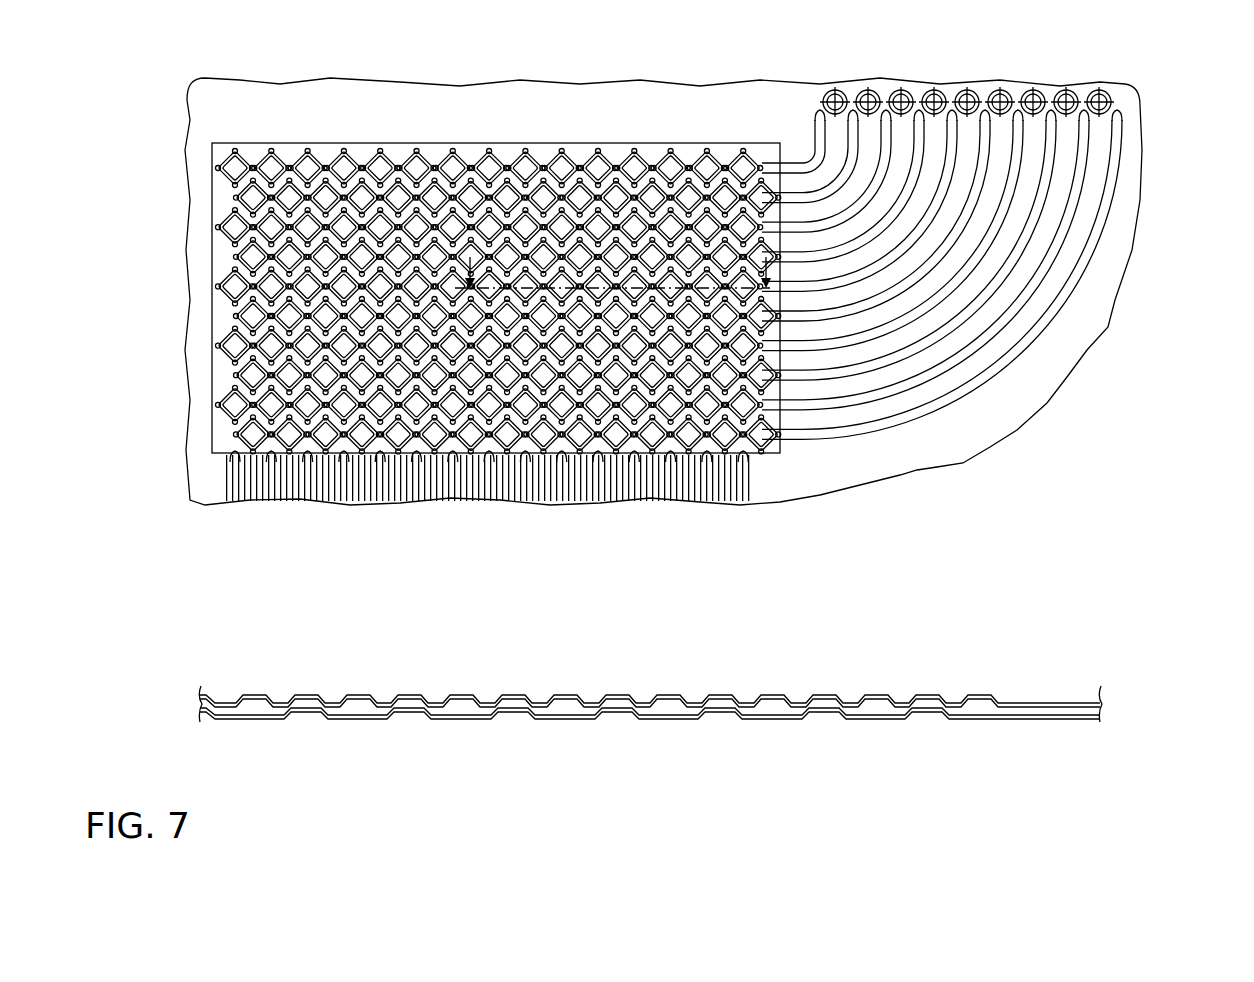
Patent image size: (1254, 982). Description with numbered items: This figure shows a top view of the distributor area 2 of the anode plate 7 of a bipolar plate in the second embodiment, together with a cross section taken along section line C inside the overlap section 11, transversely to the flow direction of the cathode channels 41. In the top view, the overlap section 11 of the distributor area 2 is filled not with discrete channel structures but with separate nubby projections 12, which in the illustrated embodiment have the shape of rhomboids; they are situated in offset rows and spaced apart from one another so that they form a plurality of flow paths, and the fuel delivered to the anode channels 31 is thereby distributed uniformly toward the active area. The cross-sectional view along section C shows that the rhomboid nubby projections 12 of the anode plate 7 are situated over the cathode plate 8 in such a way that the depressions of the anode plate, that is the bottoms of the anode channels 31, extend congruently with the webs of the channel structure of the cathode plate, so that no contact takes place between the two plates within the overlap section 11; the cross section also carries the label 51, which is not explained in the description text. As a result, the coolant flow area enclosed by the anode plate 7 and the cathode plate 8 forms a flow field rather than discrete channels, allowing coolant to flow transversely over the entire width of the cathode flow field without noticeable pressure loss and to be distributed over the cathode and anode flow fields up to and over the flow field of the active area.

The distributor area 2 is at (715, 291).
The anode plate 7 is at (650, 746).
The cathode plate 8 is at (650, 670).
The overlap section 11 is at (210, 187).
The nubby projections 12 is at (272, 407).
The anode channels 31 is at (829, 421).
The cathode channels 41 is at (850, 695).
The second electrode layer 51 is at (873, 710).
The section C- C is at (623, 454).